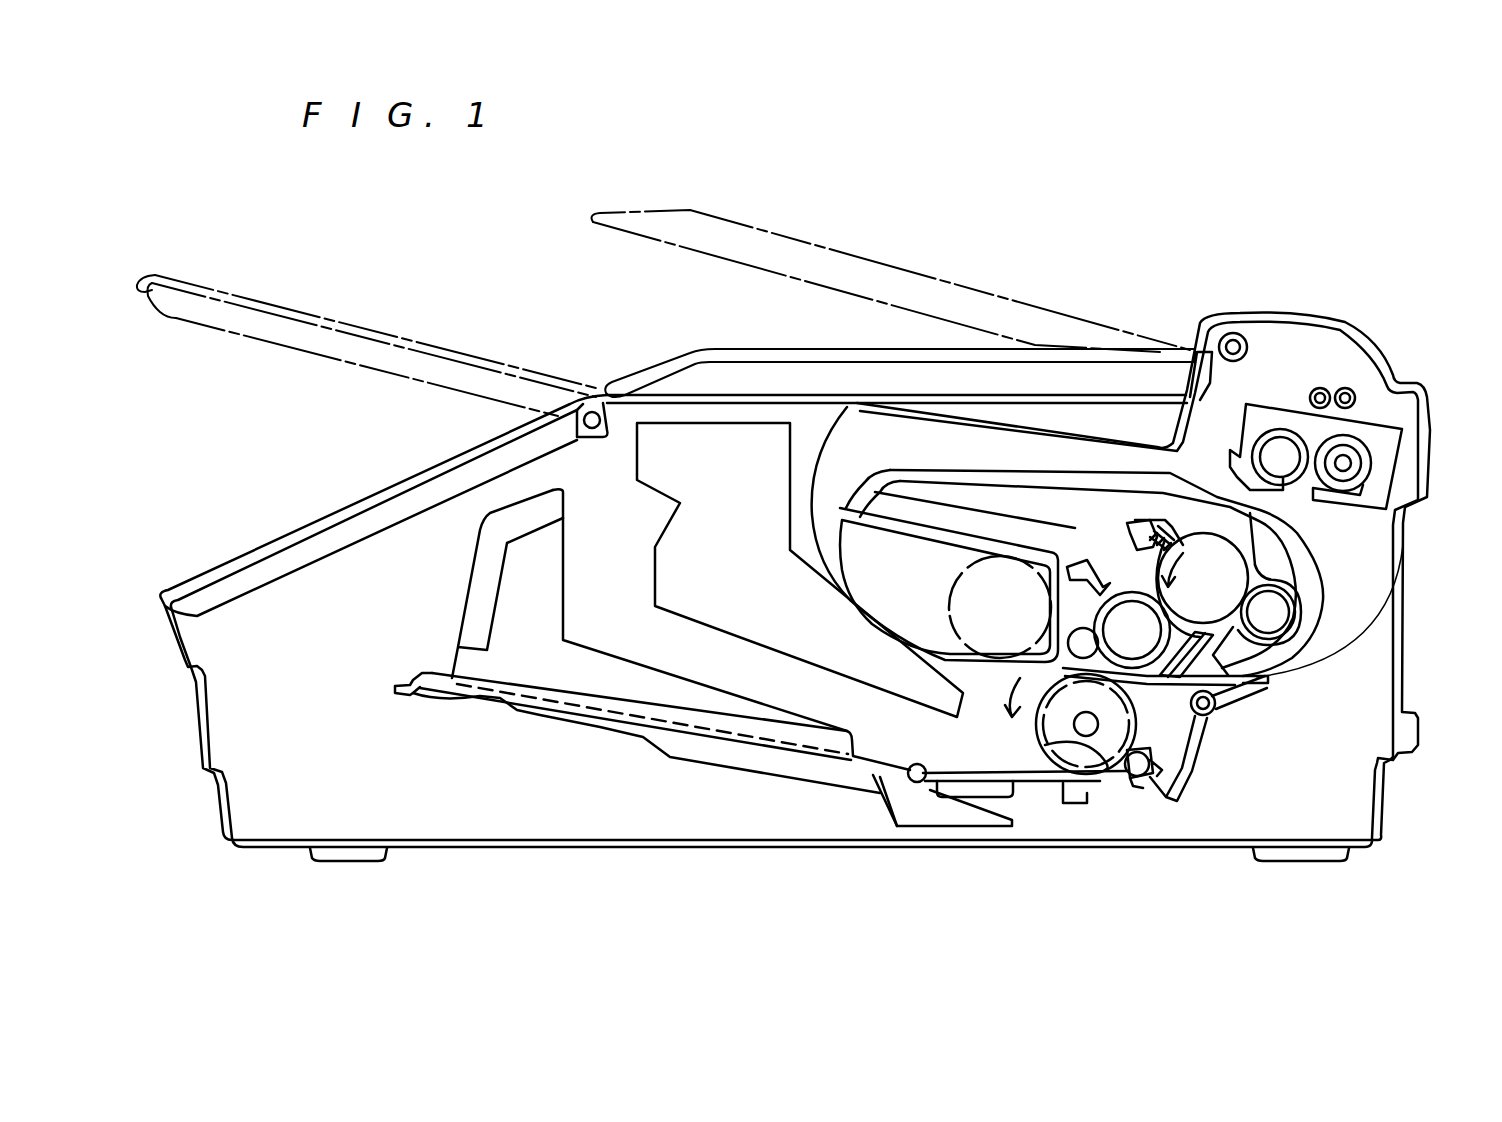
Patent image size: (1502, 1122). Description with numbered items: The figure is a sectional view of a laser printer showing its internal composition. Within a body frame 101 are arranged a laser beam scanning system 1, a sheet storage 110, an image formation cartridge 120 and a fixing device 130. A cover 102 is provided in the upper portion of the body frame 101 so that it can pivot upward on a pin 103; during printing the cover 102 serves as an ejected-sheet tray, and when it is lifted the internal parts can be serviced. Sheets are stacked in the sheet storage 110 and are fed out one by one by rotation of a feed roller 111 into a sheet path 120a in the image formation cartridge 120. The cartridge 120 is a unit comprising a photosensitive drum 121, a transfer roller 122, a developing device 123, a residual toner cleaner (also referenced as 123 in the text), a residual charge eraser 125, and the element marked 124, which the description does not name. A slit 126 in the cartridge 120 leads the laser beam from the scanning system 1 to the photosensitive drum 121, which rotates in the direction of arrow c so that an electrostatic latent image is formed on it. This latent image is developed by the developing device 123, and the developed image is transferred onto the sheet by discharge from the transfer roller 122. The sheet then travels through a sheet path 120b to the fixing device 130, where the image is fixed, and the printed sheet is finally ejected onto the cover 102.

The laser beam scanning system 1 is at (643, 593).
The body frame 101 is at (1408, 650).
The cover 102 is at (763, 250).
The pin 103 is at (1204, 378).
The sheet storage 110 is at (761, 798).
The feed roller 111 is at (1040, 753).
The image formation cartridge 120 is at (933, 441).
The sheet path 120a is at (1207, 654).
The sheet path 120b is at (1407, 523).
The photosensitive drum 121 is at (1227, 577).
The transfer roller 122 is at (1268, 612).
The developing device 123 is at (1140, 633).
The cleaning blade 124 is at (1180, 512).
The residual charge eraser 125 is at (1128, 530).
The slit 126 is at (895, 512).
The fixing device 130 is at (1417, 470).